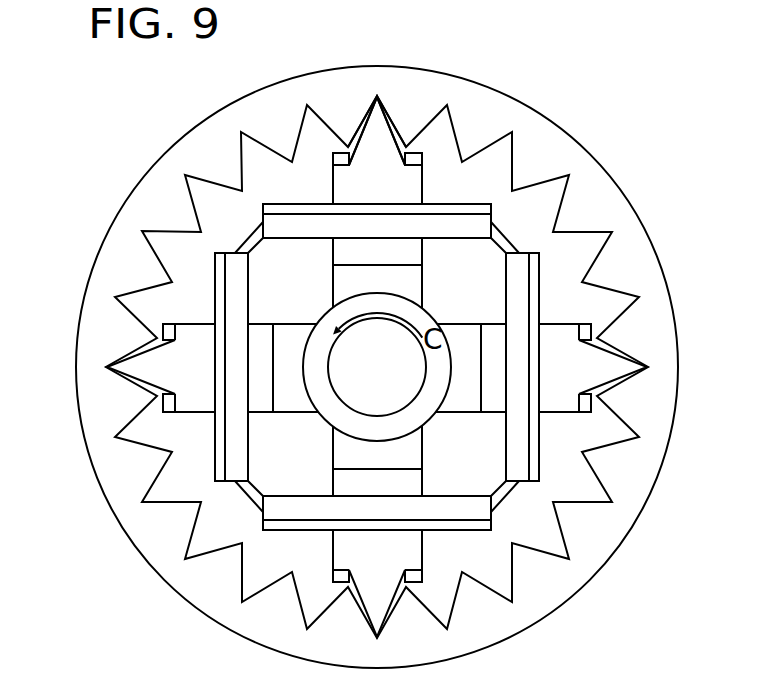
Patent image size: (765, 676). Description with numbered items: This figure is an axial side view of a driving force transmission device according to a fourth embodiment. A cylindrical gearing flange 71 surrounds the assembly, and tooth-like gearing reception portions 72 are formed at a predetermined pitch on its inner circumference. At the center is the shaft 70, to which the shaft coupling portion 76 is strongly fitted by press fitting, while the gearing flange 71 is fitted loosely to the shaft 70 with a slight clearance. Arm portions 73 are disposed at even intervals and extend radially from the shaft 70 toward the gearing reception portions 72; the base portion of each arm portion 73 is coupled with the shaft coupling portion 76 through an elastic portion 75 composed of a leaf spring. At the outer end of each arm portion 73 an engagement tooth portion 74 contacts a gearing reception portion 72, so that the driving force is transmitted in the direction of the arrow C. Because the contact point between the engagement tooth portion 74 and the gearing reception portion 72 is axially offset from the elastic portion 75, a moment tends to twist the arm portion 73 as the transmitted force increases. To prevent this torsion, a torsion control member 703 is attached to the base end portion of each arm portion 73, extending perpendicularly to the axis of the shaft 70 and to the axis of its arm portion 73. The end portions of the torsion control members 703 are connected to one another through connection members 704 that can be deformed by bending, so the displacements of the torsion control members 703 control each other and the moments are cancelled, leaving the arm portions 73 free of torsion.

The shaft 70 is at (402, 388).
The gearing flange 71 is at (530, 178).
The gearing reception portion 72 is at (358, 125).
The arm portion 73 is at (360, 180).
The engagement tooth portion 74 is at (380, 125).
The elastic portion 75 is at (383, 245).
The shaft coupling portion 76 is at (380, 298).
The torsion control member 703 is at (233, 270).
The connection member 704 is at (252, 248).